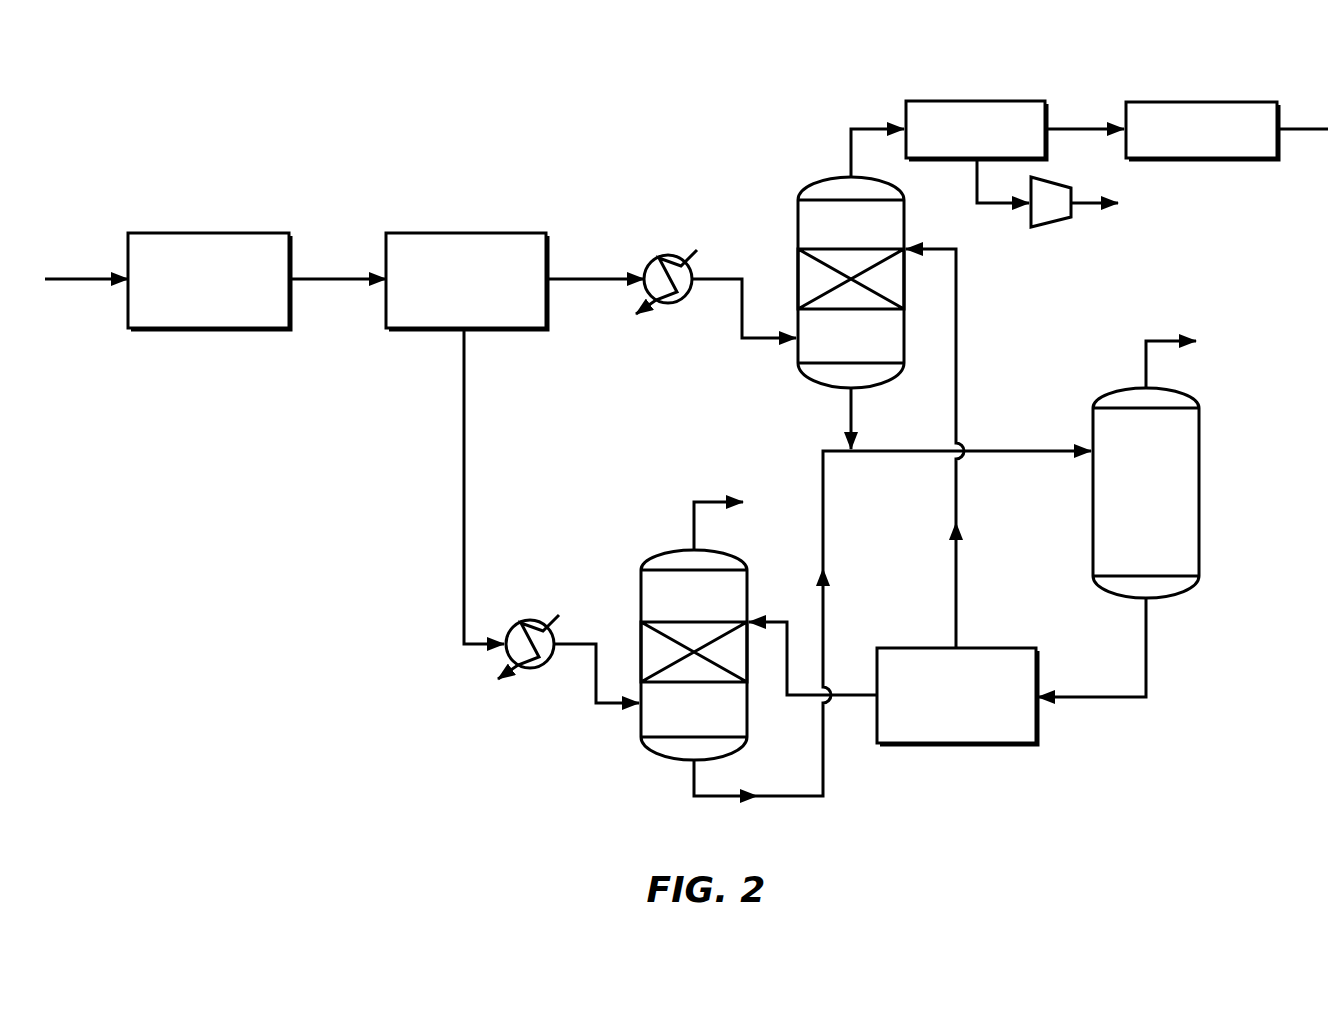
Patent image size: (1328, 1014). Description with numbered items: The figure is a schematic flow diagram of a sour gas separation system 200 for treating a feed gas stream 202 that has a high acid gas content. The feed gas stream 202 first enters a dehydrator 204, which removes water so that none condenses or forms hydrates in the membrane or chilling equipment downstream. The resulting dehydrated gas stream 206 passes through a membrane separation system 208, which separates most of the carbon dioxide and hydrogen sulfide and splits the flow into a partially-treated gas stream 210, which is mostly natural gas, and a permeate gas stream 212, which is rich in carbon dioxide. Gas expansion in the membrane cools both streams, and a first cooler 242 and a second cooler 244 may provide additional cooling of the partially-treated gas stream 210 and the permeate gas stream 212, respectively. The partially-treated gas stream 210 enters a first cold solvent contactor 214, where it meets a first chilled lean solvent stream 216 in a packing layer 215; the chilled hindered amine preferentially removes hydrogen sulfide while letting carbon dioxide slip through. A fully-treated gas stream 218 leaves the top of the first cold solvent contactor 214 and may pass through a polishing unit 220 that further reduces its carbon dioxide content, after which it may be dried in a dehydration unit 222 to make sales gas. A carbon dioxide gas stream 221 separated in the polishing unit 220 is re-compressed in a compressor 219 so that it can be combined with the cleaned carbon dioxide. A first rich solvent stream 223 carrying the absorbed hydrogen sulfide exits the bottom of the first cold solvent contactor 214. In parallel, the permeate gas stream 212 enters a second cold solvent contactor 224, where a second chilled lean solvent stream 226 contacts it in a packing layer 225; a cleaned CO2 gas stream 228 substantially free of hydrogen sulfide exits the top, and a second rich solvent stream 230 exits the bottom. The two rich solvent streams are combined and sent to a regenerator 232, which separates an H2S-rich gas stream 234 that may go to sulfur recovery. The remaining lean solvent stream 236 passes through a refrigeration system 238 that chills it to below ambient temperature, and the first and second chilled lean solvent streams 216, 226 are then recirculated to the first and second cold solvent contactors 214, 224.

The sour gas separation system 200 is at (171, 58).
The feed gas stream 202 is at (79, 275).
The dehydrator 204 is at (240, 233).
The dehydrated gas stream 206 is at (336, 273).
The membrane separation system 208 is at (498, 233).
The partially-treated gas stream 210 is at (585, 273).
The permeate gas stream 212 is at (464, 483).
The first cold solvent contactor 214 is at (798, 212).
The packing layer 215 is at (810, 273).
The first chilled lean solvent stream 216 is at (957, 315).
The fully-treated gas stream 218 is at (851, 143).
The compressor 219 is at (1052, 227).
The polishing unit 220 is at (998, 101).
The carbon dioxide gas stream 221 is at (975, 178).
The dehydration unit 222 is at (1225, 102).
The first rich solvent stream 223 is at (848, 407).
The second cold solvent contactor 224 is at (641, 582).
The packing layer 225 is at (657, 647).
The second chilled lean solvent stream 226 is at (812, 698).
The cleaned CO2 gas stream 228 is at (694, 517).
The second rich solvent stream 230 is at (787, 798).
The regenerator 232 is at (1200, 423).
The H2S-rich gas stream 234 is at (1146, 353).
The lean solvent stream 236 is at (1147, 630).
The refrigeration system 238 is at (998, 648).
The first cooler 242 is at (688, 297).
The second cooler 244 is at (548, 663).